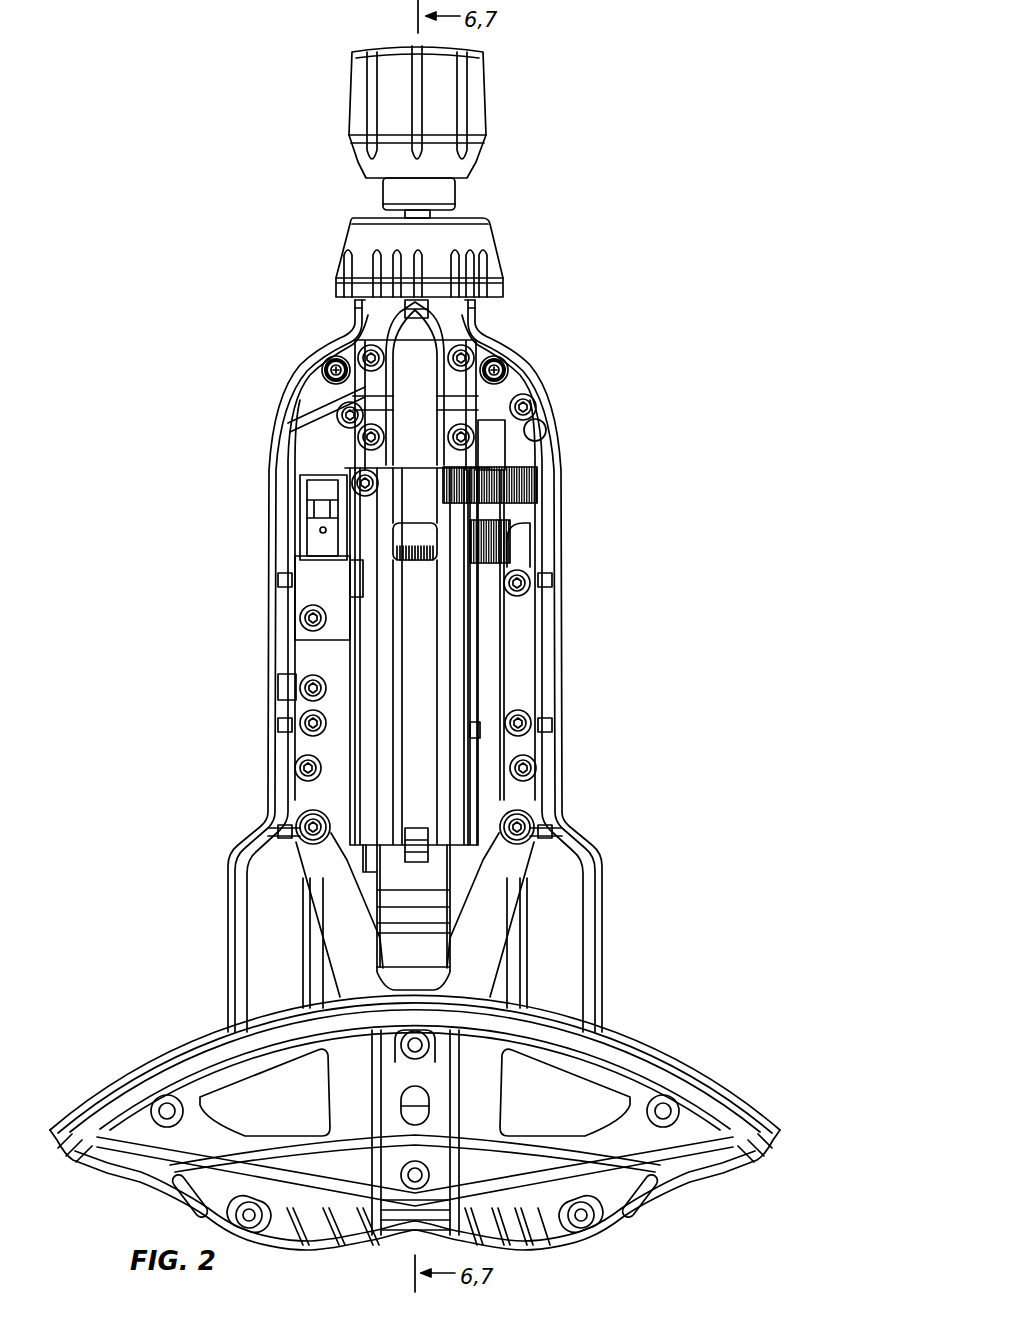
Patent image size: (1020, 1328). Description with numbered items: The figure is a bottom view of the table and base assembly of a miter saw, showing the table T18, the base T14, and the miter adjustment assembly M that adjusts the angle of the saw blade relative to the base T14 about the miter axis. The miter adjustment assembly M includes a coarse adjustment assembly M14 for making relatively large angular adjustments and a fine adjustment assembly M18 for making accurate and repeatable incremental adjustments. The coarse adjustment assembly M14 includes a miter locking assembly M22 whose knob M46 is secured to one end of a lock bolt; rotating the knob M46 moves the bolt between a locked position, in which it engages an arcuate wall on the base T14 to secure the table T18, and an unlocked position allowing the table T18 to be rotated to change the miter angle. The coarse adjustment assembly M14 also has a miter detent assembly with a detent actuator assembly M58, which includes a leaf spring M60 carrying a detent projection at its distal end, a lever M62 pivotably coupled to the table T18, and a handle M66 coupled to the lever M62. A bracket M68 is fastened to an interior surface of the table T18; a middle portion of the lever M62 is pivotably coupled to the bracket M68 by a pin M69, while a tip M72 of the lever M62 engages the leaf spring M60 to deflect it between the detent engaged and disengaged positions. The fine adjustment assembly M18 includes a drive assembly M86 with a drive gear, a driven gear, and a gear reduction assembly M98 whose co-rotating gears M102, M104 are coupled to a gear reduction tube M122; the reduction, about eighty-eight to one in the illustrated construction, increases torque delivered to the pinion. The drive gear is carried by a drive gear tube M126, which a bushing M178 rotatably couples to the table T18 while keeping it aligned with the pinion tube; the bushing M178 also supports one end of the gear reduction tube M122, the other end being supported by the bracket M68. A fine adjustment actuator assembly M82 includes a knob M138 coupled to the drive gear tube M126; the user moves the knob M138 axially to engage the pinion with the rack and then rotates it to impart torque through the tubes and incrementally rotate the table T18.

The knob M46 is at (355, 95).
The miter locking assembly M22 is at (545, 114).
The miter adjustment assembly M is at (659, 154).
The knob M138 is at (487, 217).
The fine adjustment actuator assembly M82 is at (308, 267).
The fine adjustment assembly M18 is at (561, 278).
The drive gear tube M126 is at (452, 323).
The bushing M178 is at (527, 403).
The handle M66 is at (417, 388).
The gear reduction tube M122 is at (493, 443).
The co-rotating gear M102 is at (537, 486).
The gear reduction assembly M98 is at (538, 498).
The drive assembly M86 is at (530, 529).
The co-rotating gear M104 is at (493, 543).
The bracket M68 is at (527, 632).
The coarse adjustment assembly M14 is at (485, 688).
The pin M69 is at (480, 731).
The lever M62 is at (400, 780).
The leaf spring M60 is at (335, 905).
The detent actuator assembly M58 is at (536, 890).
The table T18 is at (606, 937).
The tip M72 is at (430, 950).
The base T14 is at (680, 1085).